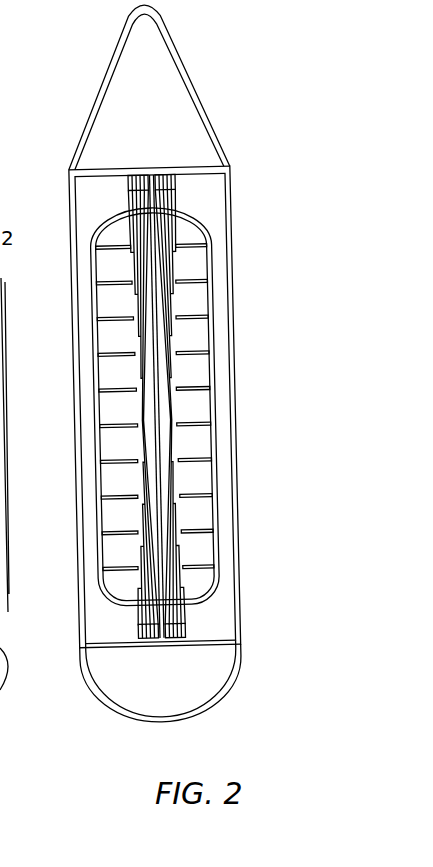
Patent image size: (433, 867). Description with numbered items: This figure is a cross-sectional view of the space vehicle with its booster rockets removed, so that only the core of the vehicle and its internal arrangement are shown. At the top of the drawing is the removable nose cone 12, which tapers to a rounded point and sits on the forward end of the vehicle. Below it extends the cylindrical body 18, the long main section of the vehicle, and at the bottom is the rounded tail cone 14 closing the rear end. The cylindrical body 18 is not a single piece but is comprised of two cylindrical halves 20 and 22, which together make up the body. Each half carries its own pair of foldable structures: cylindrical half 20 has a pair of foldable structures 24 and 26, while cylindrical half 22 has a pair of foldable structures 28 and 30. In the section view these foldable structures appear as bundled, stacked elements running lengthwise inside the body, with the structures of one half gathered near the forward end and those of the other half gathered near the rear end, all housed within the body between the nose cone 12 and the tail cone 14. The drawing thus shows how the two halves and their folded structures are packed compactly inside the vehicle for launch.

The removable nose cone 12 is at (177, 107).
The tail cone 14 is at (210, 686).
The cylindrical body 18 is at (232, 410).
The cylindrical half 20 is at (215, 205).
The cylindrical half 22 is at (87, 193).
The foldable structure 24 is at (172, 575).
The foldable structure 26 is at (162, 187).
The foldable structure 28 is at (148, 597).
The foldable structure 30 is at (137, 197).